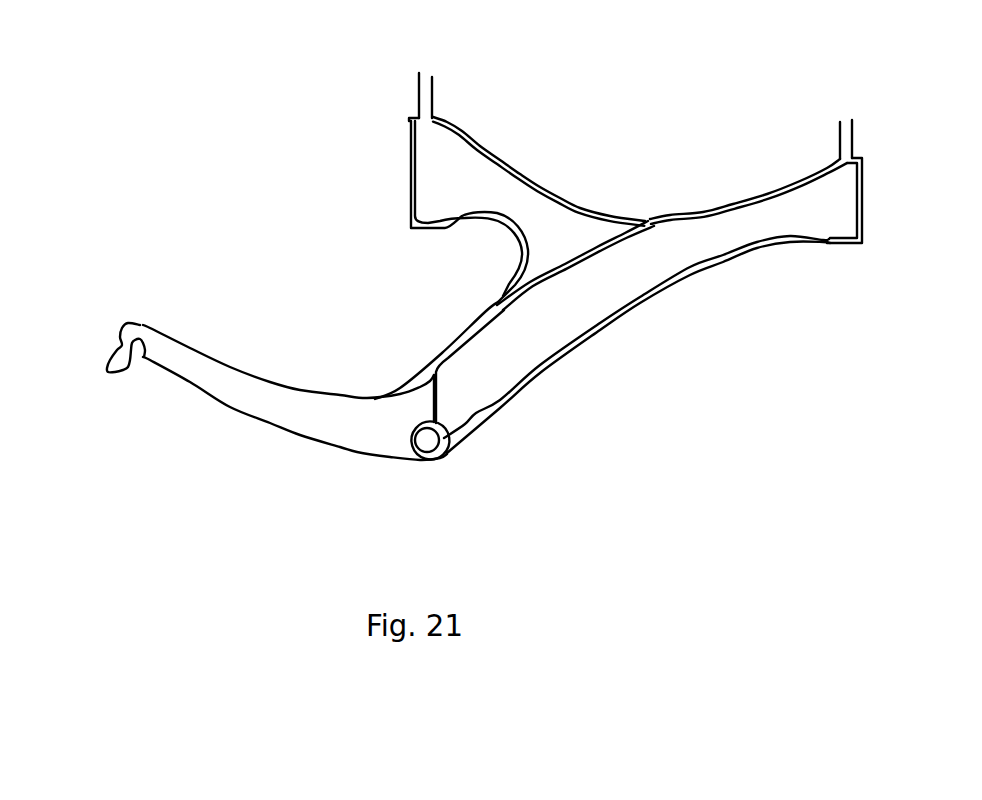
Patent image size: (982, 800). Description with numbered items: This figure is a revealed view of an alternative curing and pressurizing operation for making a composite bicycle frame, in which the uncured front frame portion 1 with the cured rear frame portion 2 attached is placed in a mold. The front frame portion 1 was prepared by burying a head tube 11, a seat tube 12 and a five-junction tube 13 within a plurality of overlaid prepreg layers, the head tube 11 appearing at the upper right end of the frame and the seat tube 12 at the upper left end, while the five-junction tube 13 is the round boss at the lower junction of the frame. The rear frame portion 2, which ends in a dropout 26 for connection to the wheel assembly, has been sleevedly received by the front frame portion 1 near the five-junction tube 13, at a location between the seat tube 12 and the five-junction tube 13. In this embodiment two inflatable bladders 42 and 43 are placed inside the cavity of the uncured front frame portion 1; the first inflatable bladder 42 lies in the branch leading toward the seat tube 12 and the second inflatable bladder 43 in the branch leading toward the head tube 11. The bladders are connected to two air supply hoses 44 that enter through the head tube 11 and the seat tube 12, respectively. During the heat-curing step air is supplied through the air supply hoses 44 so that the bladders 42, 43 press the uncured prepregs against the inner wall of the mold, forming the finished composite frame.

The front frame portion 1 is at (672, 294).
The rear frame portion 2 is at (292, 429).
The head tube 11 is at (863, 171).
The seat tube 12 is at (411, 119).
The five-junction tube 13 is at (428, 448).
The dropout 26 is at (122, 347).
The inflatable bladder 42 is at (482, 162).
The inflatable bladder 43 is at (720, 230).
The air supply hose 44 is at (426, 76).